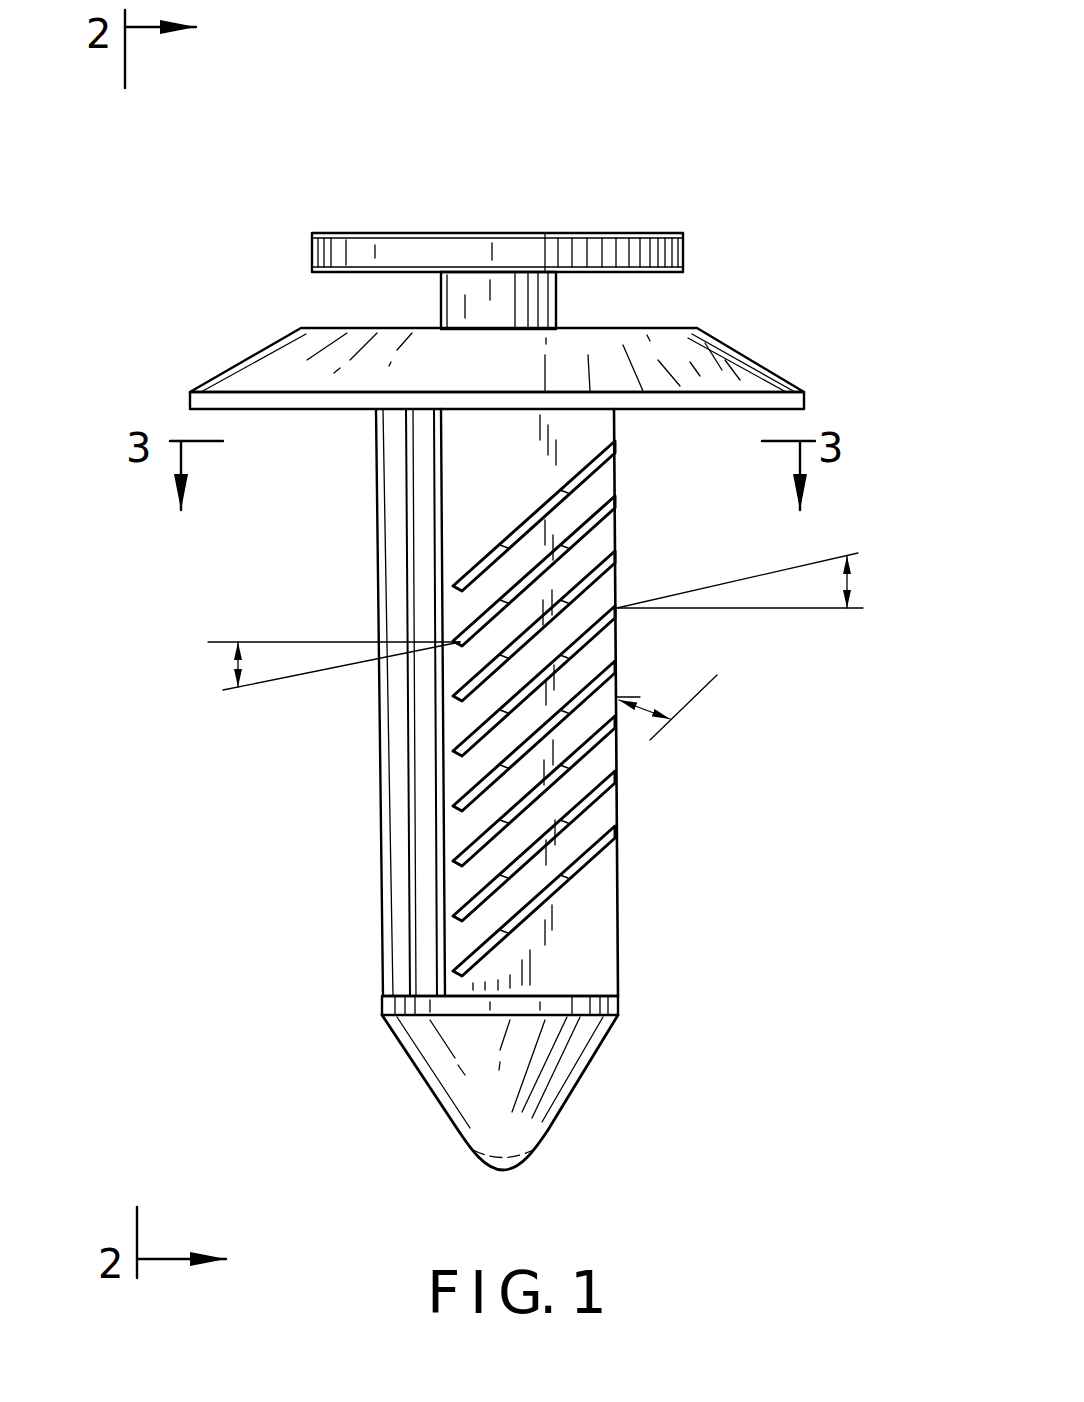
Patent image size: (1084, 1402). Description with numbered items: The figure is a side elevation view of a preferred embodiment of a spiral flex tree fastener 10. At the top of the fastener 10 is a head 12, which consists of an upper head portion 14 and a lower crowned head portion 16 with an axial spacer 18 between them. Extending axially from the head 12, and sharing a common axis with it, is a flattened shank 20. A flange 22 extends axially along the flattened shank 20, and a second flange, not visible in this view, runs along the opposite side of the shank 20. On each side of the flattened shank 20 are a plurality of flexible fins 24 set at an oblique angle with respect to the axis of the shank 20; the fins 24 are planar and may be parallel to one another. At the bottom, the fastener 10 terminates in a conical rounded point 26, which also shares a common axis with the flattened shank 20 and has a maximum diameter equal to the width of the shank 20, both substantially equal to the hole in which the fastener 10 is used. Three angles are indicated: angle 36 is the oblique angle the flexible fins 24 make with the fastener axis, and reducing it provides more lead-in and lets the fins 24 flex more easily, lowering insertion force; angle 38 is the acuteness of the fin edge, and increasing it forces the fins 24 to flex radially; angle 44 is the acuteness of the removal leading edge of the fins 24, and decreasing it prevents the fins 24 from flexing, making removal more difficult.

The spiral flex tree fastener 10 is at (571, 160).
The head 12 is at (718, 326).
The upper head portion 14 is at (312, 250).
The lower crowned head portion 16 is at (258, 366).
The axial spacer 18 is at (557, 300).
The flattened shank 20 is at (580, 945).
The flange 22 is at (427, 922).
The flexible fins 24 is at (600, 838).
The conical rounded point 26 is at (543, 1062).
The angle 36 is at (667, 700).
The angle 38 is at (317, 670).
The angle 44 is at (765, 580).